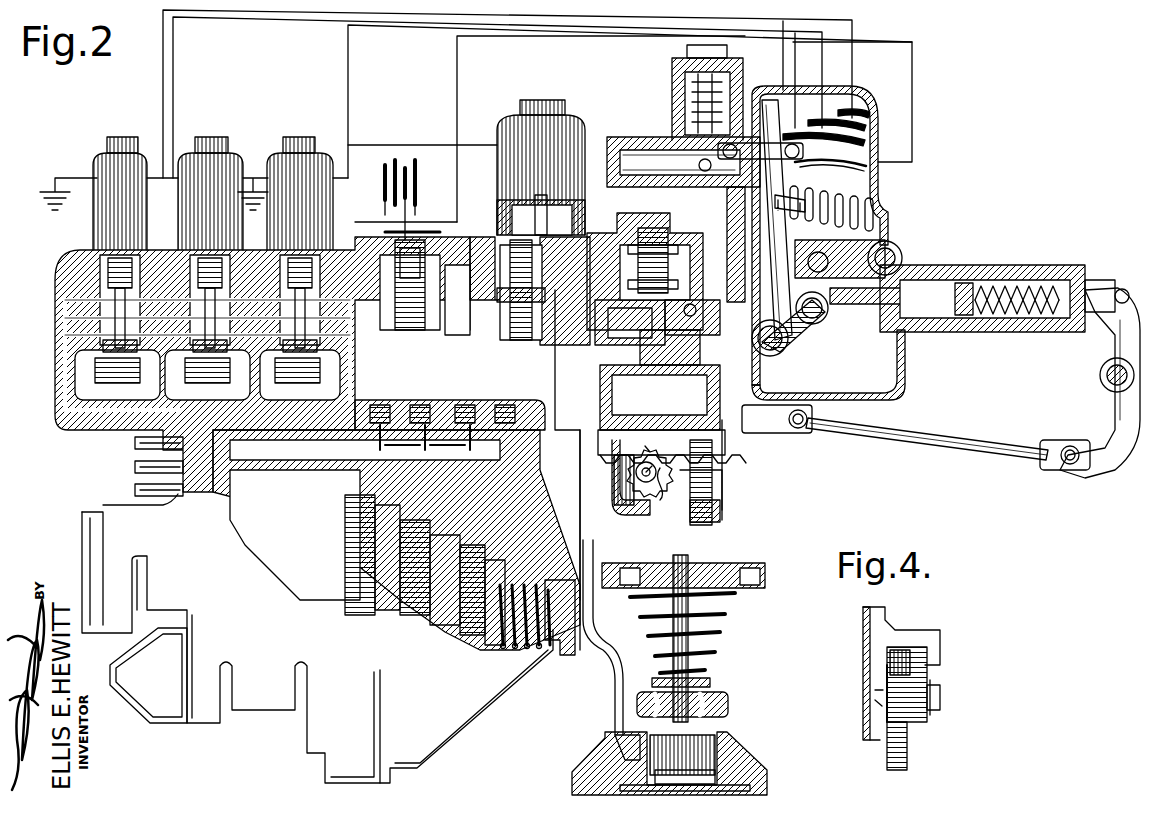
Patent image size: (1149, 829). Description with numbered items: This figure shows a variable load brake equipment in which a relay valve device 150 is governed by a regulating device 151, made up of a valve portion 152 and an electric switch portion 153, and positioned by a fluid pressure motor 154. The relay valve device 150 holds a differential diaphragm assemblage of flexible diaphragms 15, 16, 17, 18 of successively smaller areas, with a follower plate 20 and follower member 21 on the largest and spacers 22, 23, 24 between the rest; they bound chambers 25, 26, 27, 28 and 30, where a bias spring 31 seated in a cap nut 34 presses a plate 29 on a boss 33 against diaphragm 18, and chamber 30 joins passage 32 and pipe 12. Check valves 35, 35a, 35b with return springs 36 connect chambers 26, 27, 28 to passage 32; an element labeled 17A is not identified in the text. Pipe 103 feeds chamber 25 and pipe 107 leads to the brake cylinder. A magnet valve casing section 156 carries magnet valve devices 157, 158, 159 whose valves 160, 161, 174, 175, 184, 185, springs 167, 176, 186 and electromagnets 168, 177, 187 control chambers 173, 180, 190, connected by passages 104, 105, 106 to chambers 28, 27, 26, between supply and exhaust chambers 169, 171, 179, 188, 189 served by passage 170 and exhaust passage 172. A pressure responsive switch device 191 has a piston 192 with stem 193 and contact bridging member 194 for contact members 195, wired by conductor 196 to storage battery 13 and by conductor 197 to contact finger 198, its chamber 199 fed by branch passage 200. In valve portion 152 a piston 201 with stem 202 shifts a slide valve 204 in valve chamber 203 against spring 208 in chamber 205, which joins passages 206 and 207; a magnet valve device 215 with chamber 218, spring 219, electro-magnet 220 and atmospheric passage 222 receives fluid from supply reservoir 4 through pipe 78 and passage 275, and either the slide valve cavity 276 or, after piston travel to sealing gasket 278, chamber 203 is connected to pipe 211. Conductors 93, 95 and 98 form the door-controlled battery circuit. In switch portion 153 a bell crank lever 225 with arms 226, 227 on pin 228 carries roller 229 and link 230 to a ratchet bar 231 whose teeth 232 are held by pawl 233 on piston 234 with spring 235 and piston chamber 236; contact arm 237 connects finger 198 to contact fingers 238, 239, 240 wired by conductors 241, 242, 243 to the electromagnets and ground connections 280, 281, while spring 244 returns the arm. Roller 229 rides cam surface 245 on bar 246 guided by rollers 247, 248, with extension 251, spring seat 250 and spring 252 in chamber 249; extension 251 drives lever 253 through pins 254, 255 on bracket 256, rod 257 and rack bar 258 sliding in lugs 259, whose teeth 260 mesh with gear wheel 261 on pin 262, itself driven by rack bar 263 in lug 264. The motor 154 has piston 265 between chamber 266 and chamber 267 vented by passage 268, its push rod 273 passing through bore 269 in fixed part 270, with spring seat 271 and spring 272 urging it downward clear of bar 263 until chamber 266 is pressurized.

In FIG. 2, the supply reservoir 4 is at (469, 257).
In FIG. 2, the pipe 12 is at (135, 443).
In FIG. 2, the storage battery 13 is at (383, 160).
In FIG. 2, the flexible diaphragm 15 is at (358, 575).
In FIG. 2, the flexible diaphragm 16 is at (398, 610).
In FIG. 2, the flexible diaphragm 17 is at (450, 612).
In FIG. 2, the passage 17A is at (207, 395).
In FIG. 2, the flexible diaphragm 18 is at (495, 652).
In FIG. 2, the follower plate 20 is at (345, 555).
In FIG. 2, the follower member 21 is at (378, 585).
In FIG. 2, the spacer 22 is at (378, 590).
In FIG. 2, the spacer 23 is at (432, 605).
In FIG. 2, the spacer 24 is at (470, 655).
In FIG. 2, the chamber 25 is at (345, 535).
In FIG. 2, the chamber 26 is at (355, 582).
In FIG. 2, the chamber 27 is at (365, 620).
In FIG. 2, the chamber 28 is at (455, 640).
In FIG. 2, the plate 29 is at (488, 513).
In FIG. 2, the chamber 30 is at (525, 550).
In FIG. 2, the bias spring 31 is at (535, 652).
In FIG. 2, the passage 32 is at (515, 487).
In FIG. 2, the boss 33 is at (512, 590).
In FIG. 2, the cap nut 34 is at (567, 657).
In FIG. 2, the check valve 35 is at (450, 395).
In FIG. 2, the check valve 35a is at (505, 375).
In FIG. 2, the check valve 35b is at (522, 412).
In FIG. 2, the return spring 36 is at (467, 405).
In FIG. 2, the pipe 78 is at (470, 330).
In FIG. 2, the conductor 93 is at (464, 143).
In FIG. 2, the conductor 95 is at (596, 135).
In FIG. 2, the conductor 98 is at (416, 158).
In FIG. 2, the pipe 103 is at (135, 490).
In FIG. 2, the passage 104 is at (302, 460).
In FIG. 2, the passage 105 is at (255, 468).
In FIG. 2, the passage 106 is at (230, 485).
In FIG. 2, the pipe 107 is at (135, 467).
In FIG. 2, the relay valve device 150 is at (283, 722).
In FIG. 2, the regulating device 151 is at (898, 400).
In FIG. 2, the valve portion 152 is at (577, 378).
In FIG. 2, the electric switch portion 153 is at (880, 180).
In FIG. 2, the fluid pressure motor 154 is at (741, 741).
In FIG. 2, the magnet valve casing section 156 is at (57, 250).
In FIG. 2, the magnet valve device 157 is at (300, 123).
In FIG. 2, the magnet valve device 158 is at (215, 123).
In FIG. 2, the magnet valve device 159 is at (125, 123).
In FIG. 2, the valve 160 is at (314, 347).
In FIG. 2, the valve 161 is at (328, 305).
In FIG. 2, the biasing spring 167 is at (306, 375).
In FIG. 2, the electromagnet 168 is at (280, 182).
In FIG. 2, the chamber 169 is at (279, 408).
In FIG. 2, the passage 170 is at (316, 423).
In FIG. 2, the chamber 171 is at (298, 260).
In FIG. 2, the exhaust passage 172 is at (60, 292).
In FIG. 2, the chamber 173 is at (237, 301).
In FIG. 2, the valve 174 is at (229, 347).
In FIG. 2, the valve 175 is at (148, 301).
In FIG. 2, the biasing spring 176 is at (221, 375).
In FIG. 2, the electromagnet 177 is at (198, 205).
In FIG. 2, the chamber 179 is at (207, 250).
In FIG. 2, the chamber 180 is at (169, 298).
In FIG. 2, the valve 184 is at (137, 347).
In FIG. 2, the valve 185 is at (72, 270).
In FIG. 2, the biasing spring 186 is at (70, 372).
In FIG. 2, the electro-magnet 187 is at (97, 178).
In FIG. 2, the chamber 188 is at (75, 350).
In FIG. 2, the chamber 189 is at (118, 250).
In FIG. 2, the chamber 190 is at (70, 320).
In FIG. 2, the fluid pressure responsive switch device 191 is at (422, 332).
In FIG. 2, the piston 192 is at (432, 370).
In FIG. 2, the stem 193 is at (410, 256).
In FIG. 2, the contact bridging member 194 is at (403, 250).
In FIG. 2, the fixed contact members 195 is at (398, 236).
In FIG. 2, the conductor 196 is at (431, 278).
In FIG. 2, the conductor 197 is at (457, 105).
In FIG. 2, the contact finger 198 is at (836, 174).
In FIG. 2, the chamber 199 is at (404, 375).
In FIG. 2, the branch passage 200 is at (392, 262).
In FIG. 2, the piston 201 is at (581, 238).
In FIG. 2, the stem 202 is at (626, 322).
In FIG. 2, the valve chamber 203 is at (611, 333).
In FIG. 2, the slide valve 204 is at (660, 397).
In FIG. 2, the chamber 205 is at (707, 314).
In FIG. 2, the passage 206 is at (612, 232).
In FIG. 2, the passage 207 is at (727, 228).
In FIG. 2, the spring 208 is at (690, 238).
In FIG. 2, the pipe 211 is at (588, 415).
In FIG. 2, the magnet valve device 215 is at (540, 104).
In FIG. 2, the chamber 218 is at (505, 255).
In FIG. 2, the spring 219 is at (516, 345).
In FIG. 2, the electro-magnet 220 is at (515, 170).
In FIG. 2, the atmospheric passage 222 is at (505, 215).
In FIG. 2, the bell crank lever 225 is at (777, 419).
In FIG. 2, the arm 226 is at (841, 383).
In FIG. 2, the arm 227 is at (821, 233).
In FIG. 2, the pin 228 is at (780, 338).
In FIG. 2, the roller 229 is at (847, 332).
In FIG. 2, the link 230 is at (781, 220).
In FIG. 2, the ratchet bar 231 is at (630, 165).
In FIG. 2, the teeth 232 is at (660, 162).
In FIG. 2, the pawl 233 is at (679, 160).
In FIG. 2, the piston 234 is at (690, 102).
In FIG. 2, the spring 235 is at (796, 88).
In FIG. 2, the piston chamber 236 is at (674, 65).
In FIG. 2, the contact arm 237 is at (776, 157).
In FIG. 2, the contact finger 238 is at (860, 153).
In FIG. 2, the contact finger 239 is at (868, 137).
In FIG. 2, the contact finger 240 is at (868, 122).
In FIG. 2, the conductor 241 is at (350, 105).
In FIG. 2, the conductor 242 is at (177, 78).
In FIG. 2, the conductor 243 is at (165, 43).
In FIG. 2, the spring 244 is at (890, 205).
In FIG. 2, the cam surface 245 is at (803, 328).
In FIG. 2, the longitudinally movable bar 246 is at (928, 275).
In FIG. 2, the roller 247 is at (848, 243).
In FIG. 2, the roller 248 is at (913, 335).
In FIG. 2, the chamber 249 is at (995, 320).
In FIG. 2, the spring seat 250 is at (968, 283).
In FIG. 2, the integral extension 251 is at (1005, 283).
In FIG. 2, the spring 252 is at (1048, 283).
In FIG. 2, the lever 253 is at (1128, 281).
In FIG. 2, the pin 254 is at (1130, 275).
In FIG. 2, the pin 255 is at (1103, 395).
In FIG. 2, the bracket 256 is at (1000, 355).
In FIG. 2, the rod 257 is at (972, 443).
In FIG. 2, the rack bar 258 is at (726, 480).
In FIG. 4, the rack bar 258 is at (927, 657).
In FIG. 2, the lugs 259 is at (705, 433).
In FIG. 4, the lugs 259 is at (925, 636).
In FIG. 2, the teeth 260 is at (628, 450).
In FIG. 2, the gear wheel 261 is at (635, 507).
In FIG. 4, the gear wheel 261 is at (925, 722).
In FIG. 2, the pin 262 is at (672, 465).
In FIG. 4, the pin 262 is at (942, 697).
In FIG. 2, the vertically movable rack bar 263 is at (720, 518).
In FIG. 4, the vertically movable rack bar 263 is at (910, 762).
In FIG. 2, the lug 264 is at (722, 500).
In FIG. 2, the piston 265 is at (730, 758).
In FIG. 2, the chamber 266 is at (730, 778).
In FIG. 2, the chamber 267 is at (722, 692).
In FIG. 2, the passage 268 is at (712, 705).
In FIG. 2, the bore 269 is at (700, 566).
In FIG. 2, the fixed part 270 is at (765, 578).
In FIG. 2, the spring seat 271 is at (712, 678).
In FIG. 2, the spring 272 is at (735, 614).
In FIG. 2, the push rod 273 is at (708, 722).
In FIG. 2, the passage 275 is at (578, 348).
In FIG. 2, the cavity 276 is at (692, 348).
In FIG. 2, the sealing gasket 278 is at (652, 236).
In FIG. 2, the ground connection 280 is at (262, 205).
In FIG. 2, the ground connection 281 is at (55, 178).